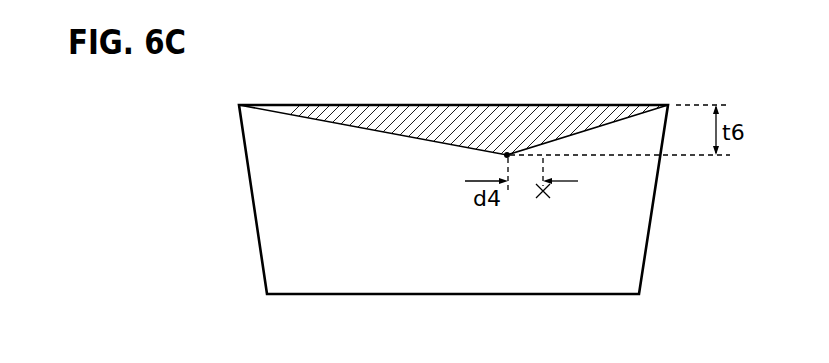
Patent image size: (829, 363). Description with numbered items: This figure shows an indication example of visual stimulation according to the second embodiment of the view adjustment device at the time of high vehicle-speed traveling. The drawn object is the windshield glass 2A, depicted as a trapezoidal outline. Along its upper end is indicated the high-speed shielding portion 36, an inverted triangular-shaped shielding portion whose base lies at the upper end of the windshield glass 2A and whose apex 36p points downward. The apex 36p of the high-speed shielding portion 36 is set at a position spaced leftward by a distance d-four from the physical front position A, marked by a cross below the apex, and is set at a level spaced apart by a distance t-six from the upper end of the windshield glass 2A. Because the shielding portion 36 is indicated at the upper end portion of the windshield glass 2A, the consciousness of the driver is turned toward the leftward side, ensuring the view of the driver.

The windshield glass 2A is at (247, 162).
The high-speed shielding portion 36 is at (411, 100).
The apex of the high-speed shielding portion 36p is at (505, 157).
The physical front position A is at (546, 196).